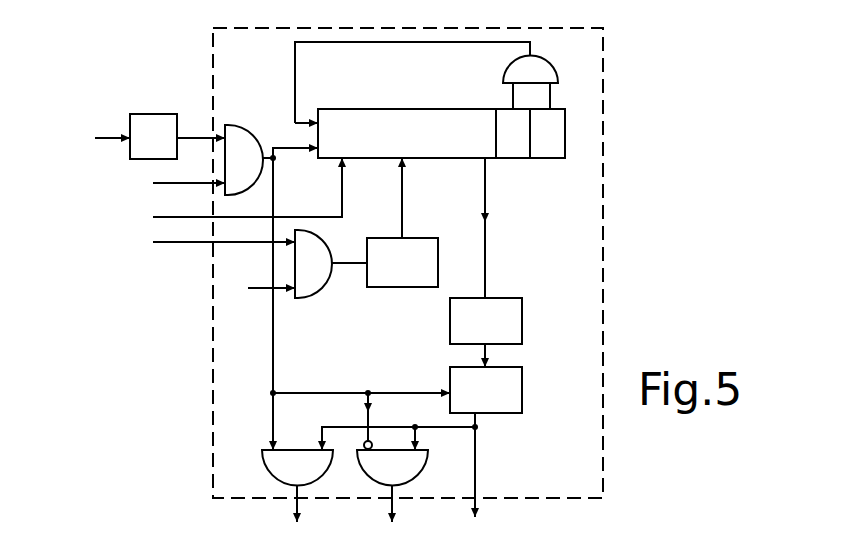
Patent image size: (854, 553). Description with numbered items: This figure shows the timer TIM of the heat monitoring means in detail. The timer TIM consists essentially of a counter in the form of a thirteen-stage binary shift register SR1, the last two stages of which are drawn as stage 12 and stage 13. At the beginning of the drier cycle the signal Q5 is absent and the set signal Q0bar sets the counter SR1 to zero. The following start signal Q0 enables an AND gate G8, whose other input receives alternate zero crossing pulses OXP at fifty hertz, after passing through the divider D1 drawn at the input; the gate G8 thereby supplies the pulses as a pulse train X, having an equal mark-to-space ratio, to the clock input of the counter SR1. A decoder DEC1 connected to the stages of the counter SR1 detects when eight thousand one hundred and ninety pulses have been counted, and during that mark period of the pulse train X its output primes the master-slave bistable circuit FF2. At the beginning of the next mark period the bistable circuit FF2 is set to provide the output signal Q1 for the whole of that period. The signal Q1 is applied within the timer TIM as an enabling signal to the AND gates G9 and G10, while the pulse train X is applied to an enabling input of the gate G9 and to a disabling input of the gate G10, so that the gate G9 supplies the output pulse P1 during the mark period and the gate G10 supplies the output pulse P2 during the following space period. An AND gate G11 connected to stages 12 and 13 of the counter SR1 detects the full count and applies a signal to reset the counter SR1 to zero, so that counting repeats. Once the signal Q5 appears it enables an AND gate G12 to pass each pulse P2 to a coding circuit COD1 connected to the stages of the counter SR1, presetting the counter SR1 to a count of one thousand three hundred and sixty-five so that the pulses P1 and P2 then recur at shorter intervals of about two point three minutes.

The timer TIM is at (603, 93).
The divider by two D1 is at (153, 121).
The AND gate G8 is at (241, 146).
The AND gate G9 is at (279, 473).
The AND gate G10 is at (414, 473).
The AND gate G11 is at (550, 74).
The AND gate G12 is at (325, 276).
The binary shift register SR1 is at (513, 162).
The stage 12 of the counter 12 is at (513, 128).
The stage 13 of the counter 13 is at (547, 128).
The coding circuit COD1 is at (402, 222).
The decoder DEC1 is at (486, 321).
The master-slave bistable circuit FF2 is at (486, 390).
The zero crossing pulses OXP is at (81, 136).
The start signal Q0 is at (166, 183).
The set signal Q0bar is at (128, 205).
The signal Q5 is at (202, 251).
The output pulse P2 is at (328, 407).
The output pulse P1 is at (281, 508).
The output signal Q1 is at (495, 472).
The pulse train X is at (356, 297).